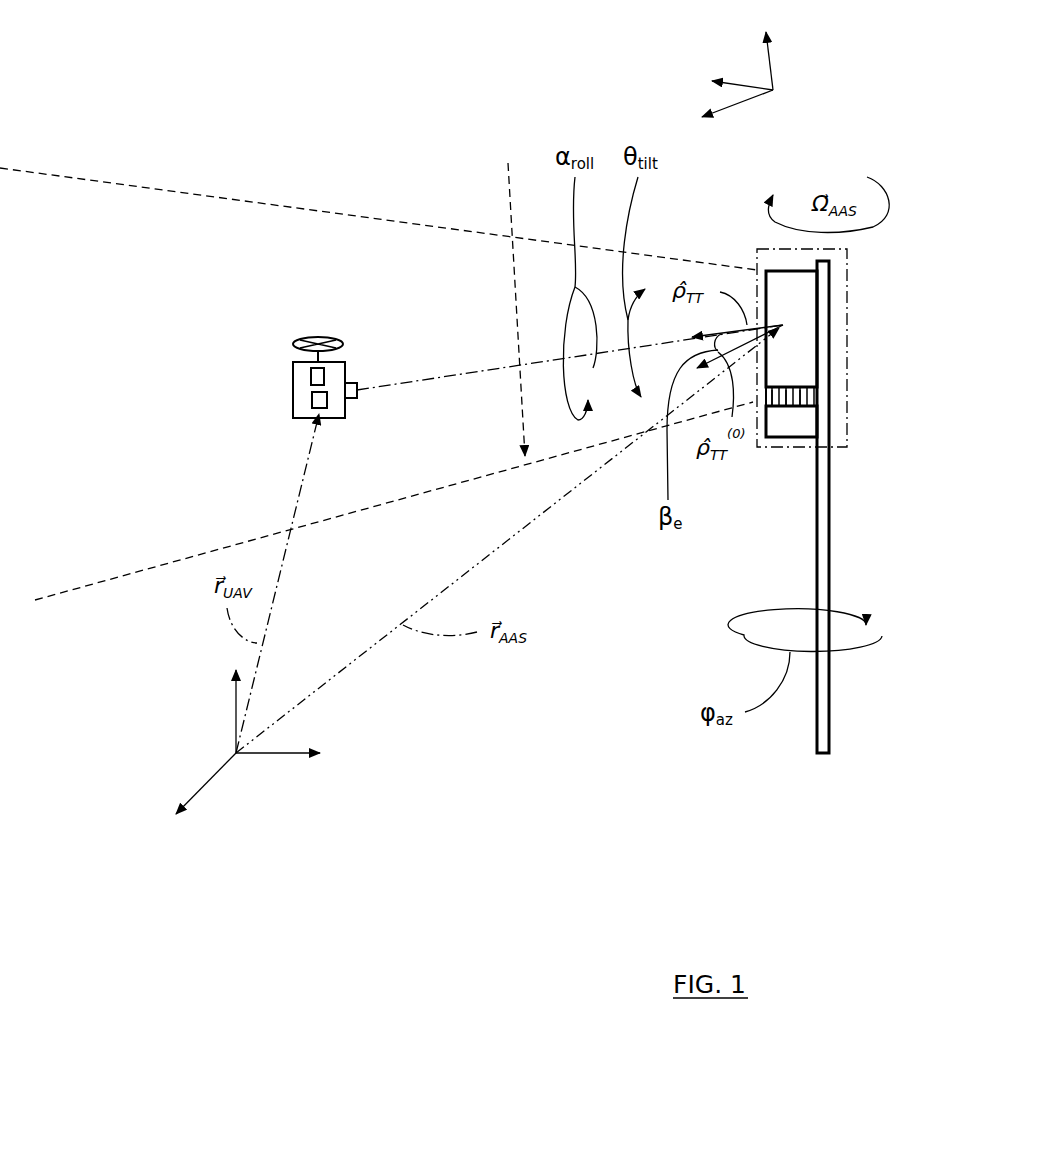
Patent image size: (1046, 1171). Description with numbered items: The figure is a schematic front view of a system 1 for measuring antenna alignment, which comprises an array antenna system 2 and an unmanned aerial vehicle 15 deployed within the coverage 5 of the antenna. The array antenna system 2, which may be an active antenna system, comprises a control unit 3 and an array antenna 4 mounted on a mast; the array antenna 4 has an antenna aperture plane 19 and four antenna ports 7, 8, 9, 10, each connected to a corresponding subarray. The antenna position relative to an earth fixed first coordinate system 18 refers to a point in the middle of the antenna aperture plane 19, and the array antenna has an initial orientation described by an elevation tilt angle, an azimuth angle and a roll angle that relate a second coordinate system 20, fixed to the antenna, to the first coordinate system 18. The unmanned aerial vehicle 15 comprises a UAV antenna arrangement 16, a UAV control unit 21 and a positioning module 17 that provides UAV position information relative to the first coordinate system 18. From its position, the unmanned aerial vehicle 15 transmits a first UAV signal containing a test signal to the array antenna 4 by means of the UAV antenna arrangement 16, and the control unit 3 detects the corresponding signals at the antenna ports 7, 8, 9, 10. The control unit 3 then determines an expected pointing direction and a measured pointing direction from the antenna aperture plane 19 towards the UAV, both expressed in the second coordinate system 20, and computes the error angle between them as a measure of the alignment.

The system for measuring antenna alignment 1 is at (314, 123).
The array antenna system 2 is at (847, 330).
The control unit 3 is at (810, 423).
The array antenna 4 is at (790, 316).
The coverage 5 is at (537, 236).
The first antenna port 7 is at (774, 408).
The second antenna port 8 is at (785, 407).
The third antenna port 9 is at (798, 407).
The fourth antenna port 10 is at (813, 397).
The unmanned aerial vehicle 15 is at (348, 297).
The UAV antenna arrangement 16 is at (353, 398).
The positioning module 17 is at (312, 377).
The first coordinate system 18 is at (190, 735).
The antenna aperture plane 19 is at (762, 282).
The second coordinate system 20 is at (732, 47).
The UAV control unit 21 is at (322, 399).